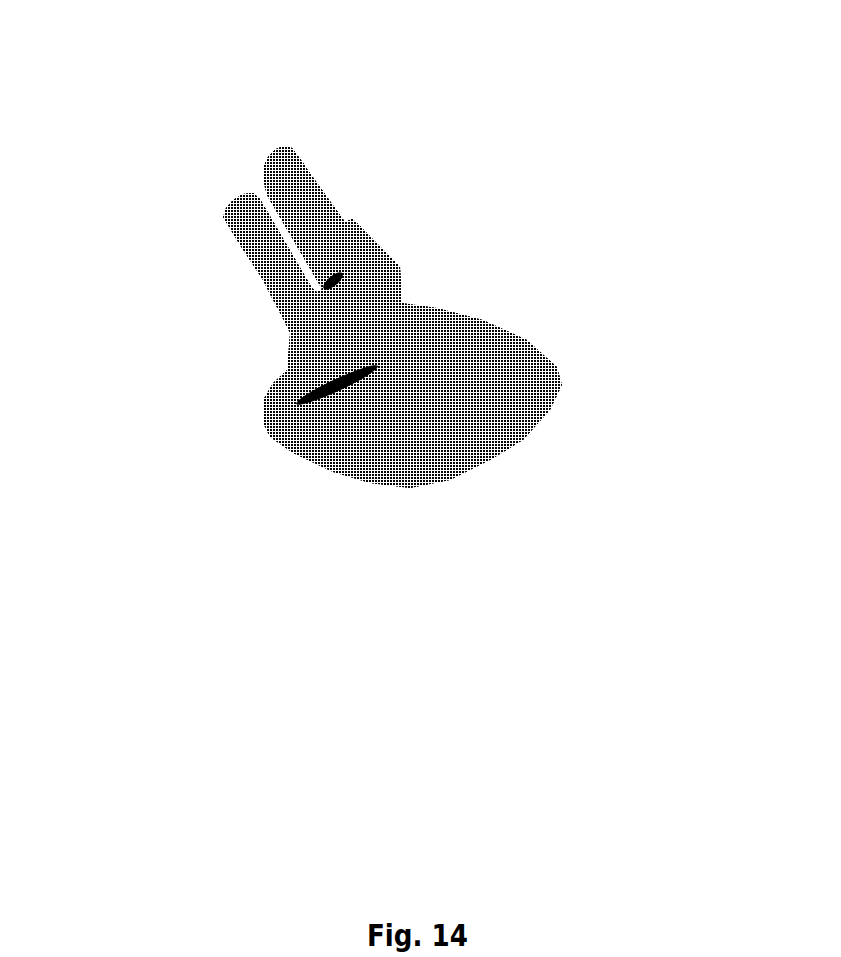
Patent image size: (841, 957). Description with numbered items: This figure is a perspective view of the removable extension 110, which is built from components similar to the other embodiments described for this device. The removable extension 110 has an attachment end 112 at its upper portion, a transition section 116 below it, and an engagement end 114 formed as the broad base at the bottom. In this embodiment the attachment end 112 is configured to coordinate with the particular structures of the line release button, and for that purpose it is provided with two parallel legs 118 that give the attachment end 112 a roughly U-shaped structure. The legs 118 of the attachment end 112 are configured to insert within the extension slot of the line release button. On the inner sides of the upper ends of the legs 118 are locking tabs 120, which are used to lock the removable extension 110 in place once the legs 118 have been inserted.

The removable extension 110 is at (438, 164).
The attachment end 112 is at (196, 278).
The engagement end 114 is at (497, 461).
The transition section 116 is at (413, 268).
The legs 118 is at (337, 181).
The locking tabs 120 is at (262, 177).